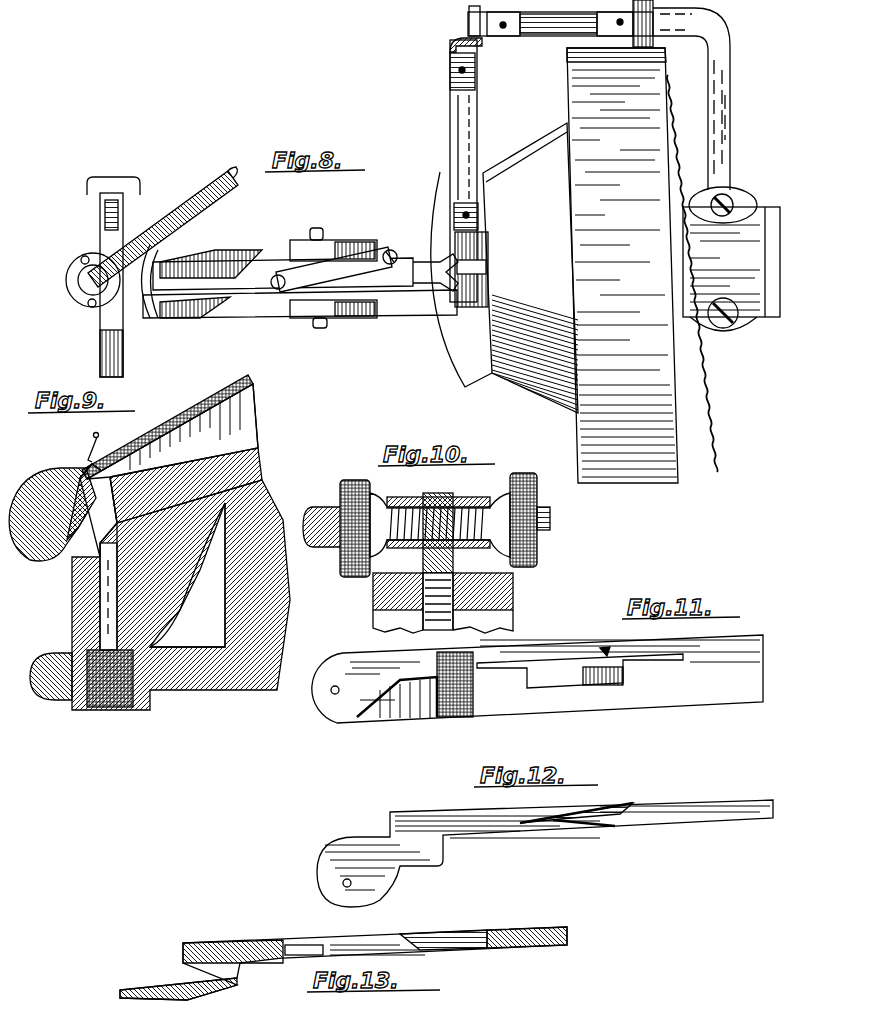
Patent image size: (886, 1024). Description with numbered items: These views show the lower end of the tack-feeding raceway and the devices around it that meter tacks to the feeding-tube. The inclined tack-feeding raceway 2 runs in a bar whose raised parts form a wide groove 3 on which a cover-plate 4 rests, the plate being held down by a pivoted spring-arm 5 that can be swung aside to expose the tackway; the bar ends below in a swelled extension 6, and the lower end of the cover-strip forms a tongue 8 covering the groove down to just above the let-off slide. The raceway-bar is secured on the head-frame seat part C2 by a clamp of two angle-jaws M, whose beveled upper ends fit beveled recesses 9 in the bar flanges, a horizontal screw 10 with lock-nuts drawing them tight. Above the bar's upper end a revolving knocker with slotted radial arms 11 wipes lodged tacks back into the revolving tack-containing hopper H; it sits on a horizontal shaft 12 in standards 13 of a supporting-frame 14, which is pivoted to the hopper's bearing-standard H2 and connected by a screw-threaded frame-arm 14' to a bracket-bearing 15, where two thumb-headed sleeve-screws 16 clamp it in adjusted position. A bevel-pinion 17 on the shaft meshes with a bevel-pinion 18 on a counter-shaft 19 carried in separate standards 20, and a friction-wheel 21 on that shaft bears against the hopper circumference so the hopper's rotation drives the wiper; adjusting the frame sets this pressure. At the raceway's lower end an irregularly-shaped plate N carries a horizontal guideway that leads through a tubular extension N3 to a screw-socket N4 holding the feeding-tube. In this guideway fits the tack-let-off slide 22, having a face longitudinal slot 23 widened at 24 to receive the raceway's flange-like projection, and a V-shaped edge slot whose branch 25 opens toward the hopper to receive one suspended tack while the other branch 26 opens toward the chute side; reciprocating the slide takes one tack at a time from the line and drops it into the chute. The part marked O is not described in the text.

In FIG. 9, the tack-feeding raceway 2 is at (186, 485).
In FIG. 9, the wide groove 3 is at (172, 431).
In FIG. 8, the cover-plate 4 is at (300, 288).
In FIG. 9, the cover-plate 4 is at (167, 427).
In FIG. 8, the spring-arm 5 is at (334, 269).
In FIG. 9, the swelled extension 6 is at (52, 508).
In FIG. 9, the tongue 8 is at (93, 442).
In FIG. 8, the beveled recesses 9 is at (163, 227).
In FIG. 8, the screw 10 is at (310, 329).
In FIG. 8, the radial arms 11 is at (435, 269).
In FIG. 8, the horizontal shaft 12 is at (470, 148).
In FIG. 8, the standards 13 is at (454, 148).
In FIG. 8, the supporting-frame 14 is at (601, 155).
In FIG. 10, the frame-arm 14' is at (436, 517).
In FIG. 10, the bracket-bearing 15 is at (450, 533).
In FIG. 10, the sleeve-screws 16 is at (438, 515).
In FIG. 8, the bevel-pinion 17 is at (454, 45).
In FIG. 8, the bevel-pinion 18 is at (466, 18).
In FIG. 8, the counter-shaft 19 is at (548, 30).
In FIG. 8, the standards 20 is at (560, 18).
In FIG. 8, the friction-wheel 21 is at (654, 23).
In FIG. 11, the tack-let-off slide 22 is at (537, 679).
In FIG. 12, the tack-let-off slide 22 is at (545, 845).
In FIG. 13, the tack-let-off slide 22 is at (343, 963).
In FIG. 11, the face longitudinal slot 23 is at (537, 662).
In FIG. 11, the widened slot portion 24 is at (580, 677).
In FIG. 13, the widened slot portion 24 is at (350, 945).
In FIG. 12, the slot branch 25 is at (640, 801).
In FIG. 11, the slot branch 26 is at (607, 652).
In FIG. 12, the slot branch 26 is at (613, 826).
In FIG. 8, the revolving tack-containing hopper H is at (642, 219).
In FIG. 8, the bearing-standard H2 is at (731, 259).
In FIG. 8, the bracket plate O is at (111, 277).
In FIG. 8, the angle-jaws M is at (362, 239).
In FIG. 9, the guideway-plate N is at (52, 592).
In FIG. 9, the tubular extension N3 is at (78, 586).
In FIG. 9, the screw-socket N4 is at (110, 693).
In FIG. 10, the head-frame seat part C2 is at (457, 603).